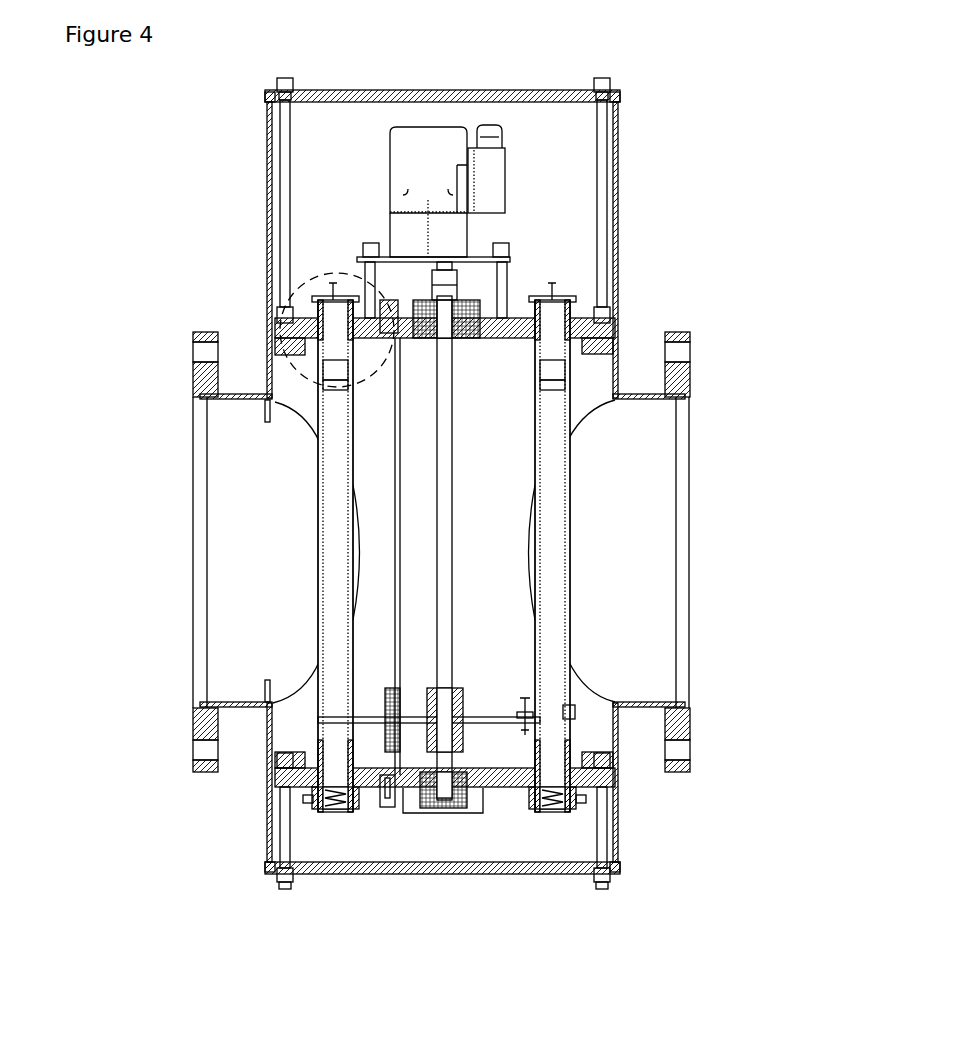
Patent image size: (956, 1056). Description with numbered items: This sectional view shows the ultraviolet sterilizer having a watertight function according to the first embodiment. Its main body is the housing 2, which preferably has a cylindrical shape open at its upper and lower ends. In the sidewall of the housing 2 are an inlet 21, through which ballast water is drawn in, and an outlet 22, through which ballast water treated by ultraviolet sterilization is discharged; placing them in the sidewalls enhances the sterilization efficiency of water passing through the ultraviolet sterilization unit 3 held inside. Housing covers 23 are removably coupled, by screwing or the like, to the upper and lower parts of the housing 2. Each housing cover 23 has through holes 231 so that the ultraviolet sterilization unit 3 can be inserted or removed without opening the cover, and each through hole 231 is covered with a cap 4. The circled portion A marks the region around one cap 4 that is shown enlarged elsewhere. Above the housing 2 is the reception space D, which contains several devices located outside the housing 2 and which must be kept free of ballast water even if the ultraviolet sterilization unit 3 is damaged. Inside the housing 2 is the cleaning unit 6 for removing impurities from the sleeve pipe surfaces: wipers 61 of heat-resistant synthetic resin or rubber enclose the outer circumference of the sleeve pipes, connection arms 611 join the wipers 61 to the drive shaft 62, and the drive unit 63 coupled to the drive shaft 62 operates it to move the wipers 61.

The housing 2 is at (275, 340).
The inlet 21 is at (165, 513).
The outlet 22 is at (710, 542).
The housing cover 23 is at (580, 300).
The through hole 231 is at (573, 350).
The ultraviolet sterilization unit 3 is at (298, 582).
The cap 4 is at (563, 292).
The circled portion A is at (300, 275).
The reception space D is at (533, 168).
The cleaning unit 6 is at (748, 905).
The wiper 61 is at (575, 720).
The connection arm 611 is at (508, 724).
The drive shaft 62 is at (452, 400).
The drive unit 63 is at (425, 355).